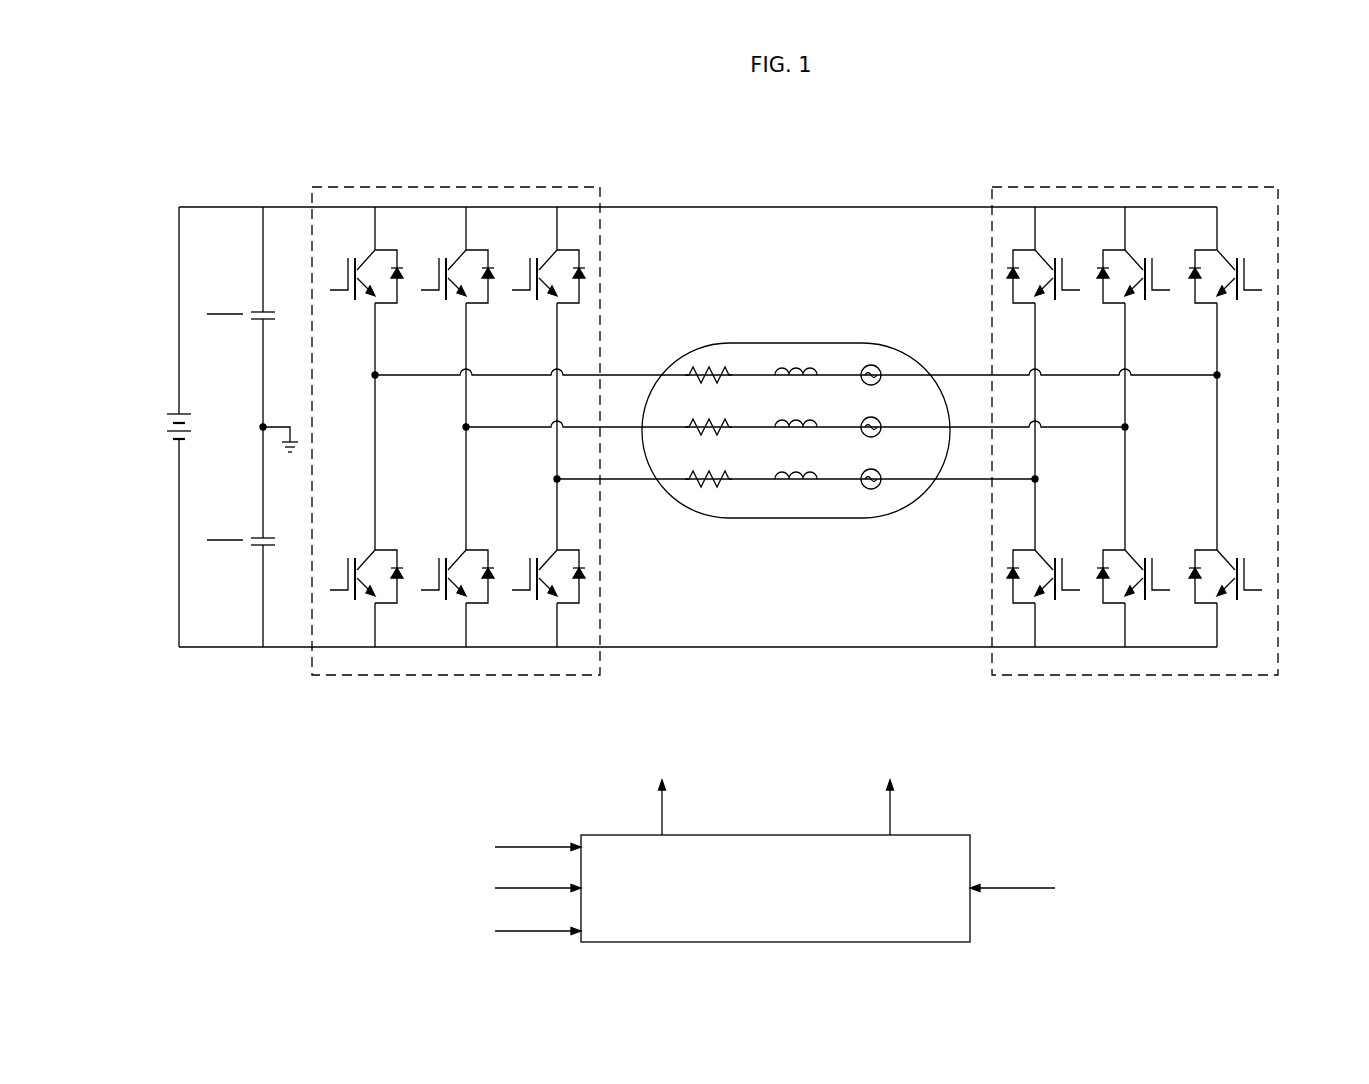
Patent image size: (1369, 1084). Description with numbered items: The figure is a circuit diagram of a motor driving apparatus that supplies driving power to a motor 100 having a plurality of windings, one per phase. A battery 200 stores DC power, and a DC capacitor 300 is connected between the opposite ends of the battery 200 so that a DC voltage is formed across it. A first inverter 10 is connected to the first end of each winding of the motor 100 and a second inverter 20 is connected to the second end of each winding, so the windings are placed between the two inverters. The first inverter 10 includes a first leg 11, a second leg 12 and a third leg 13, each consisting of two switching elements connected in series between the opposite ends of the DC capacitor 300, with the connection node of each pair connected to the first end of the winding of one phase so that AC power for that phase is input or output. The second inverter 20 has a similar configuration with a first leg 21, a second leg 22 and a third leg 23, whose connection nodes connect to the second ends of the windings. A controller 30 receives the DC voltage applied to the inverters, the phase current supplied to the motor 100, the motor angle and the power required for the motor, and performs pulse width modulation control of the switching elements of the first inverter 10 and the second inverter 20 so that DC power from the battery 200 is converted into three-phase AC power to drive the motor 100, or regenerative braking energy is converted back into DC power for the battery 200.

The first inverter 10 is at (450, 187).
The second inverter 20 is at (1152, 187).
The controller 30 is at (975, 922).
The motor 100 is at (820, 343).
The battery 200 is at (172, 414).
The DC capacitor 300 is at (258, 312).
The first leg 11 is at (375, 660).
The second leg 12 is at (466, 660).
The third leg 13 is at (557, 660).
The first leg 21 is at (1035, 660).
The second leg 22 is at (1125, 660).
The third leg 23 is at (1217, 660).